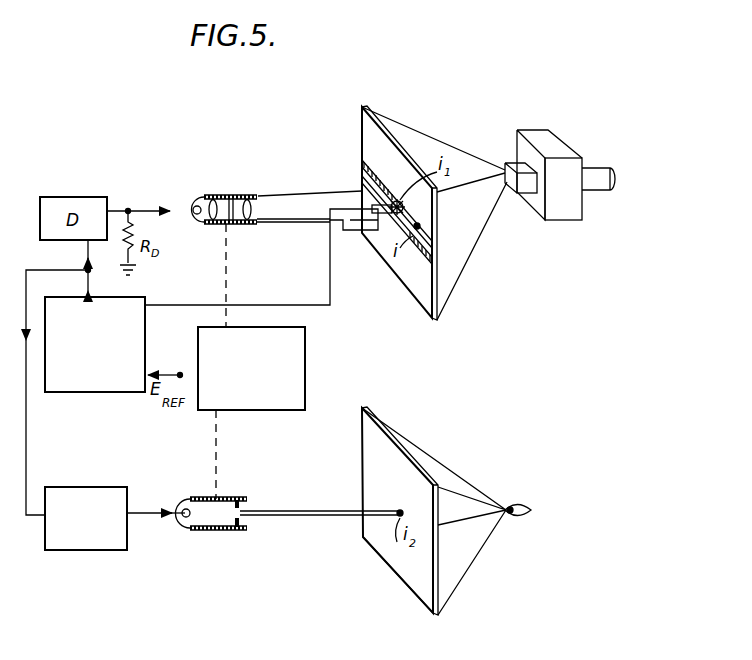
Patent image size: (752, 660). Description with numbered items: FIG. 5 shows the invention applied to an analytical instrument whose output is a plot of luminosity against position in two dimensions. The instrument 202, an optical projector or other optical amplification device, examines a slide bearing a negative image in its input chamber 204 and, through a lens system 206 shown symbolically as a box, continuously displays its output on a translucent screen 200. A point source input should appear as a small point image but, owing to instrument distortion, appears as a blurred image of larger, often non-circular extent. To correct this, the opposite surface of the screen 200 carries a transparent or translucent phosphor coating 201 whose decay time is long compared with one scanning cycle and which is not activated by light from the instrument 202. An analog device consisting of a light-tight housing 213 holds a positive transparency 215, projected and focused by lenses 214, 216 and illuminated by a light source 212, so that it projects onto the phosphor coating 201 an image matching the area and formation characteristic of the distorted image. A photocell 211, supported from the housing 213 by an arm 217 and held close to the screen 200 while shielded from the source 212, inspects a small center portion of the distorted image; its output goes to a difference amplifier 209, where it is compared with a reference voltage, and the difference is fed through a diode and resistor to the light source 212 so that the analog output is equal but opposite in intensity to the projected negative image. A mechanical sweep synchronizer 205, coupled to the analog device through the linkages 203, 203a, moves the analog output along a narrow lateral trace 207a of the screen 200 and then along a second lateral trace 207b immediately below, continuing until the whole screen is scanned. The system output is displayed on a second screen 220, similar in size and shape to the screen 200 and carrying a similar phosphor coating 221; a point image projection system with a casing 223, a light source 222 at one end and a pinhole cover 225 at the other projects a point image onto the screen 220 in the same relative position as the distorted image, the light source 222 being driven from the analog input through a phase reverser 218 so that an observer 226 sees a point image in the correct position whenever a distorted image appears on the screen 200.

The translucent screen 200 is at (443, 300).
The phosphor coating 201 is at (409, 270).
The instrument 202 is at (531, 127).
The mechanical linkage 203 is at (232, 308).
The mechanical linkage 203a is at (216, 455).
The input chamber 204 is at (606, 168).
The mechanical sweep synchronizer 205 is at (309, 343).
The lens system 206 is at (527, 195).
The lateral trace 207a is at (418, 228).
The second lateral trace 207b is at (437, 258).
The difference amplifier 209 is at (67, 393).
The photocell 211 is at (362, 195).
The light source 212 is at (207, 197).
The light-tight housing 213 is at (232, 196).
The lens 214 is at (207, 224).
The positive transparency 215 is at (243, 224).
The lens 216 is at (272, 188).
The arm 217 is at (300, 226).
The phase reverser 218 is at (103, 553).
The screen 220 is at (446, 598).
The phosphor coating 221 is at (422, 582).
The light source 222 is at (194, 499).
The casing 223 is at (207, 530).
The cover 225 is at (245, 520).
The observer 226 is at (510, 521).